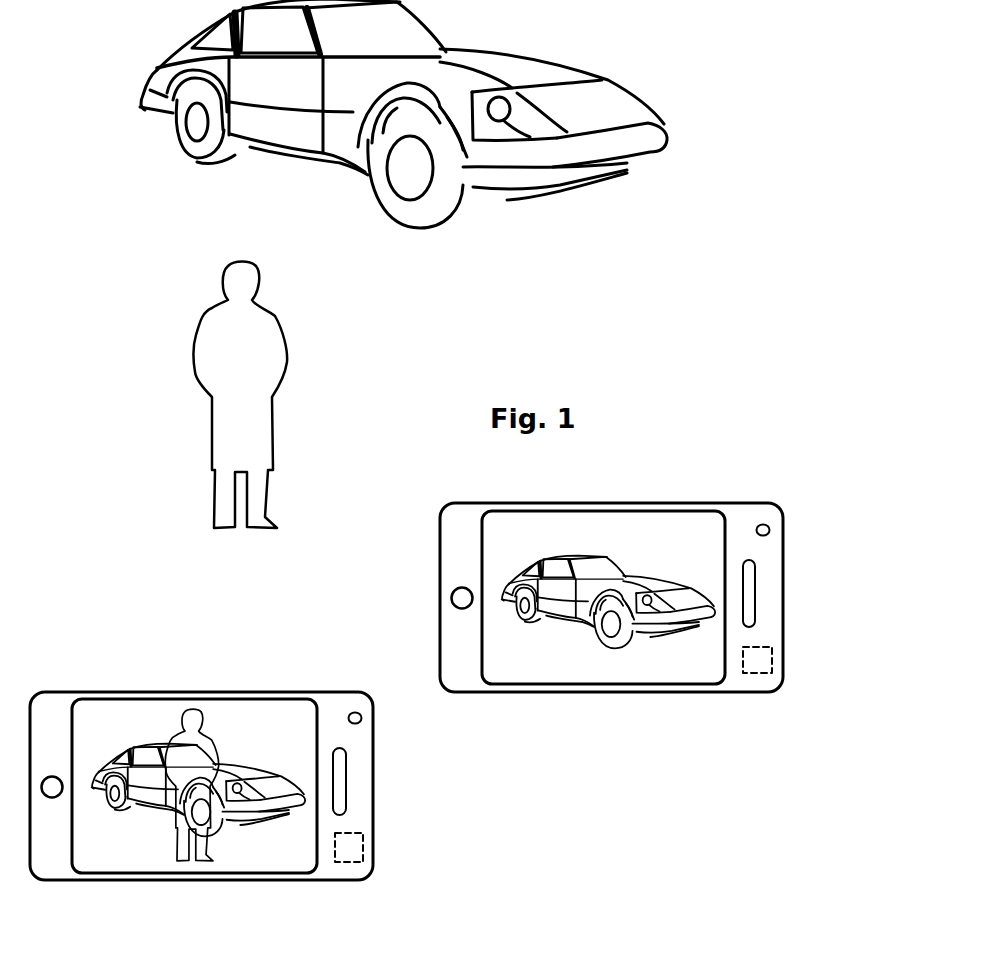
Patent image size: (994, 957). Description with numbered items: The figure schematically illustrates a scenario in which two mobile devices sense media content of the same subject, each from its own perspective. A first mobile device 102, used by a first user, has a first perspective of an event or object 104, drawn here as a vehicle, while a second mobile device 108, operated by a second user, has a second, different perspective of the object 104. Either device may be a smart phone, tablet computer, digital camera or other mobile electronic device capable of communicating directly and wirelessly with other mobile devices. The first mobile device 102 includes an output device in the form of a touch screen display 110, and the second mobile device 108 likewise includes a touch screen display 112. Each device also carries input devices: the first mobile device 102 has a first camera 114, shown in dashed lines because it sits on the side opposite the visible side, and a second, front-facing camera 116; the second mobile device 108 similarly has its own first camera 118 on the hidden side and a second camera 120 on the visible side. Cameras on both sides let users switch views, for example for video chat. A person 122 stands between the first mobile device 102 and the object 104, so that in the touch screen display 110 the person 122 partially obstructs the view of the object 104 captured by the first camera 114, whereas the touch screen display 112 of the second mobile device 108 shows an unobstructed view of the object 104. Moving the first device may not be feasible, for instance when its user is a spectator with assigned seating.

The first mobile device 102 is at (241, 800).
The object 104 is at (600, 49).
The second mobile device 108 is at (650, 611).
The touch screen display 110 is at (319, 861).
The touch screen display 112 is at (727, 670).
The first camera 114 is at (365, 846).
The second camera 116 is at (363, 718).
The first camera 118 is at (774, 657).
The second camera 120 is at (771, 529).
The person 122 is at (283, 351).